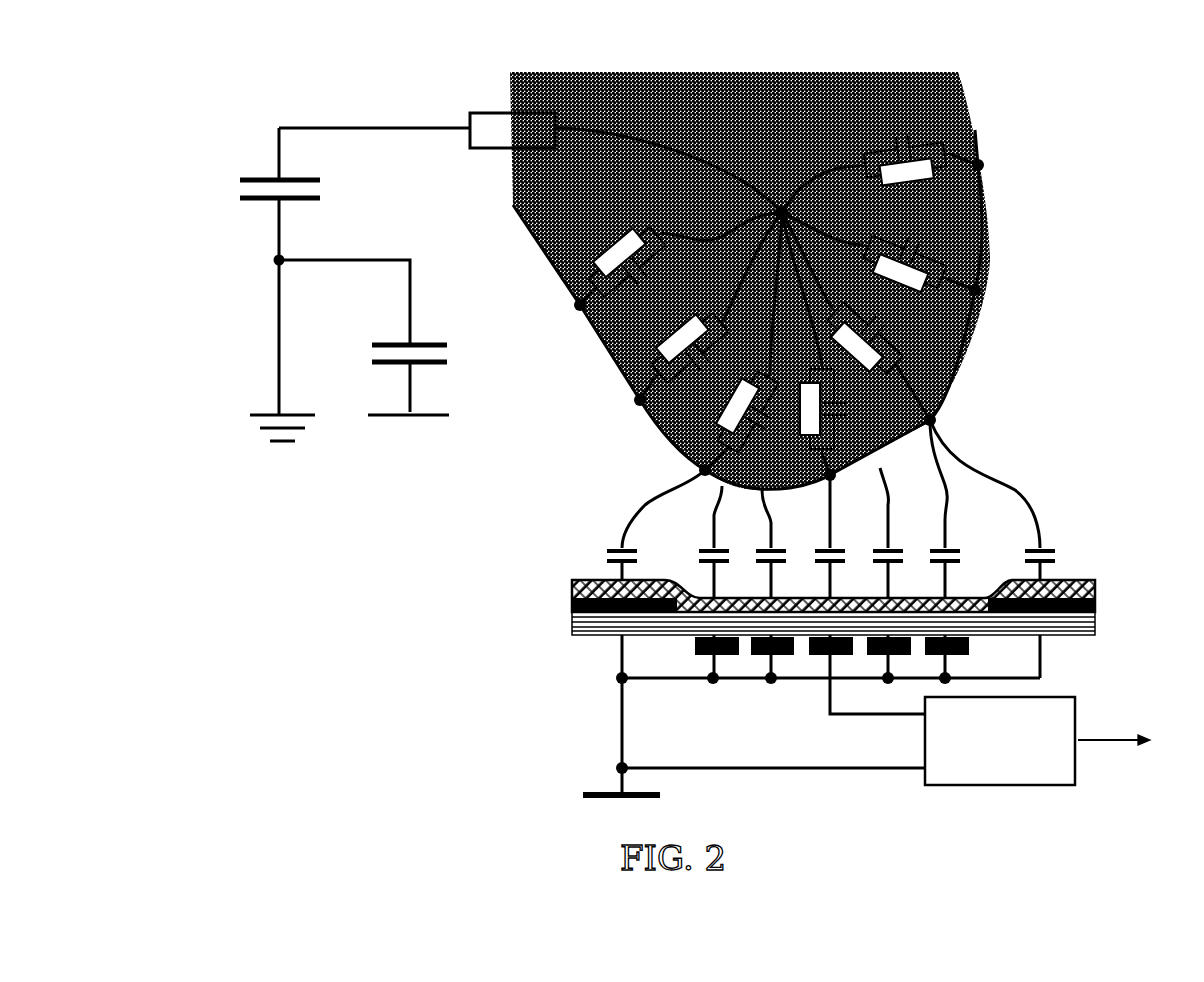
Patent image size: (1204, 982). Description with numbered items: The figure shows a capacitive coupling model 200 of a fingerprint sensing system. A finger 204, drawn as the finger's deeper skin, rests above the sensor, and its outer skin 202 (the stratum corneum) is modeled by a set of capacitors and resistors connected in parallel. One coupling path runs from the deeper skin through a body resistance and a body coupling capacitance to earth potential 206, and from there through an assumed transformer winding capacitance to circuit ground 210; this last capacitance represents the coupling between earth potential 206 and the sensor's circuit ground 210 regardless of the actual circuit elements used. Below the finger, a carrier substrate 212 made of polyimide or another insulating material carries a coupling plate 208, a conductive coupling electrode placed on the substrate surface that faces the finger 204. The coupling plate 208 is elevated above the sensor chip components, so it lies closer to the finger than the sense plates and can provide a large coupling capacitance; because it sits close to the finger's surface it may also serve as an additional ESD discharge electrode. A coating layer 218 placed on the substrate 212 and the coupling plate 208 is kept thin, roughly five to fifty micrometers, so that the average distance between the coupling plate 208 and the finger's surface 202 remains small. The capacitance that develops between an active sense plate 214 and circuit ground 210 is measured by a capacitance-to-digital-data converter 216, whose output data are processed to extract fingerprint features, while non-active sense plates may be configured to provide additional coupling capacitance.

The capacitive coupling model 200 is at (398, 66).
The finger's outer skin 202 is at (704, 472).
The finger 204 is at (637, 90).
The earth potential 206 is at (273, 470).
The coupling plate 208 is at (572, 600).
The circuit ground 210 is at (403, 470).
The carrier substrate 212 is at (597, 644).
The active sense plate 214 is at (815, 668).
The capacitance-to-digital-data converter 216 is at (965, 754).
The coating layer 218 is at (1075, 580).